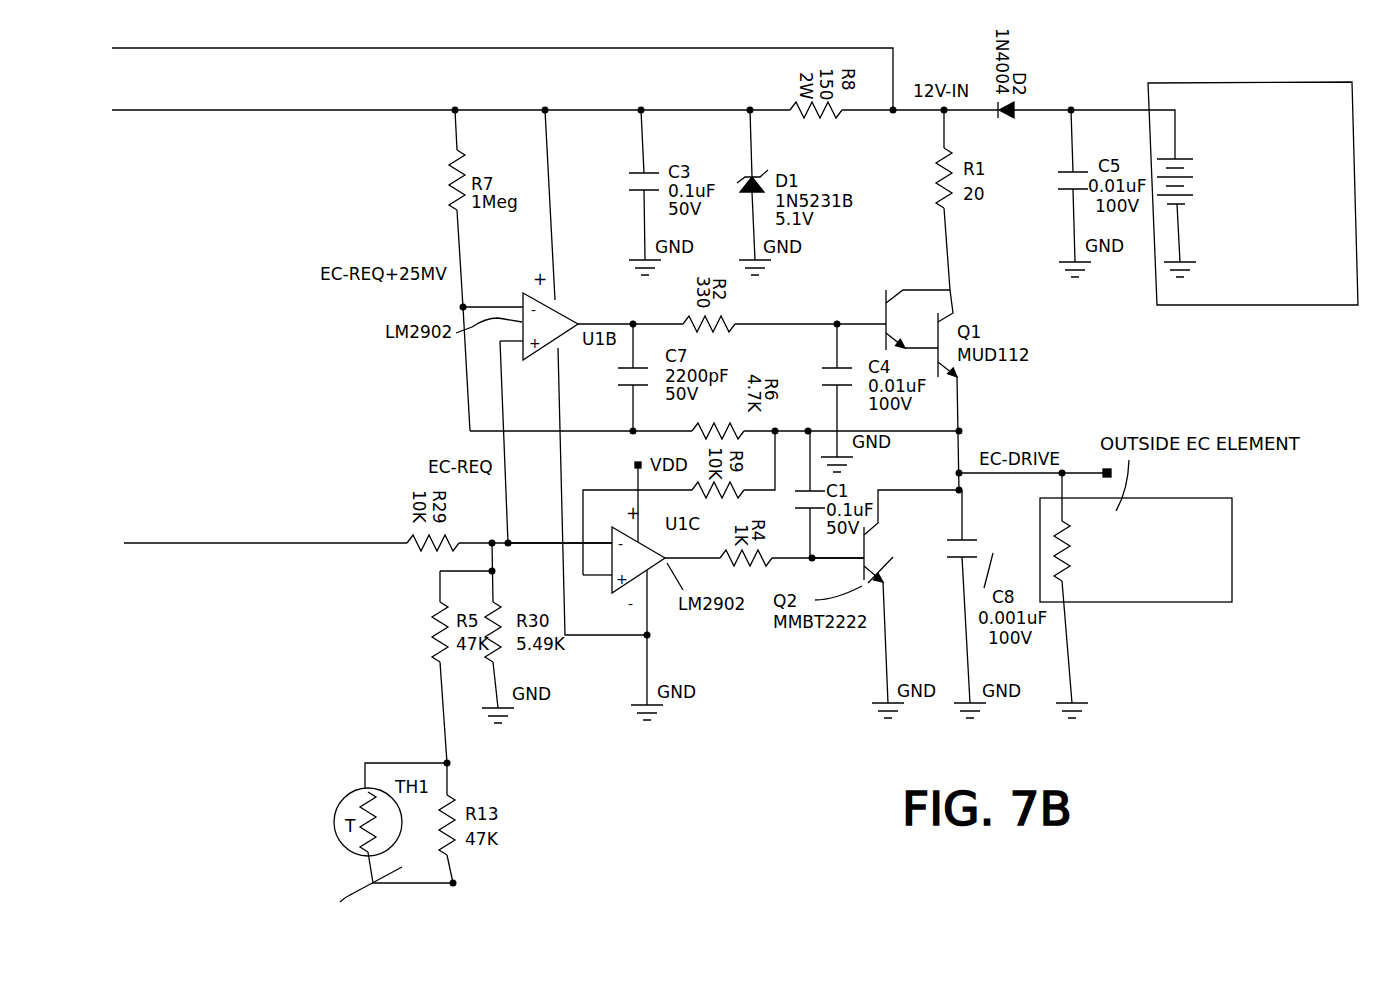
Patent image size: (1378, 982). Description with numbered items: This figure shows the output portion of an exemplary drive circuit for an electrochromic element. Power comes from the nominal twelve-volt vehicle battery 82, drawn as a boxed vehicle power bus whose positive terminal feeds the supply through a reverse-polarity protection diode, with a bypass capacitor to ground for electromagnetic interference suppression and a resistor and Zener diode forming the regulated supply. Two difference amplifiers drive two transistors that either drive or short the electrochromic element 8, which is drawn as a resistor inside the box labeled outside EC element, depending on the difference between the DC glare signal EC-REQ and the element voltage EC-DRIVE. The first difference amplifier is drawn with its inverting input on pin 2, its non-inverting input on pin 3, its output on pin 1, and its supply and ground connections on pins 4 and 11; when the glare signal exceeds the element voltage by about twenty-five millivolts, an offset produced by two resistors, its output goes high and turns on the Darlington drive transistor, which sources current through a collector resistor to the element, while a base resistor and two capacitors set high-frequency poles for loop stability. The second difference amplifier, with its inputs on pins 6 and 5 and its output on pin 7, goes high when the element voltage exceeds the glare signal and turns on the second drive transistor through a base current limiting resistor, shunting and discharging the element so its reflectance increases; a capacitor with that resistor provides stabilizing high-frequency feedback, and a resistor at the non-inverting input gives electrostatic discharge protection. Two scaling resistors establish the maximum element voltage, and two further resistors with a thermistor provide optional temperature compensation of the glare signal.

The vehicle battery 82 is at (1216, 82).
The EC element (R_EC) 8 is at (1136, 595).
The op-amp U1B output pin 1 is at (630, 313).
The op-amp U1B inverting input pin 2 is at (520, 325).
The op-amp U1B non-inverting input pin 3 is at (511, 436).
The op-amp supply pin 4 is at (602, 329).
The op-amp ground pin 11 is at (615, 488).
The op-amp U1C non-inverting input pin 5 is at (637, 532).
The op-amp U1C inverting input pin 6 is at (586, 555).
The op-amp U1C output pin 7 is at (764, 550).